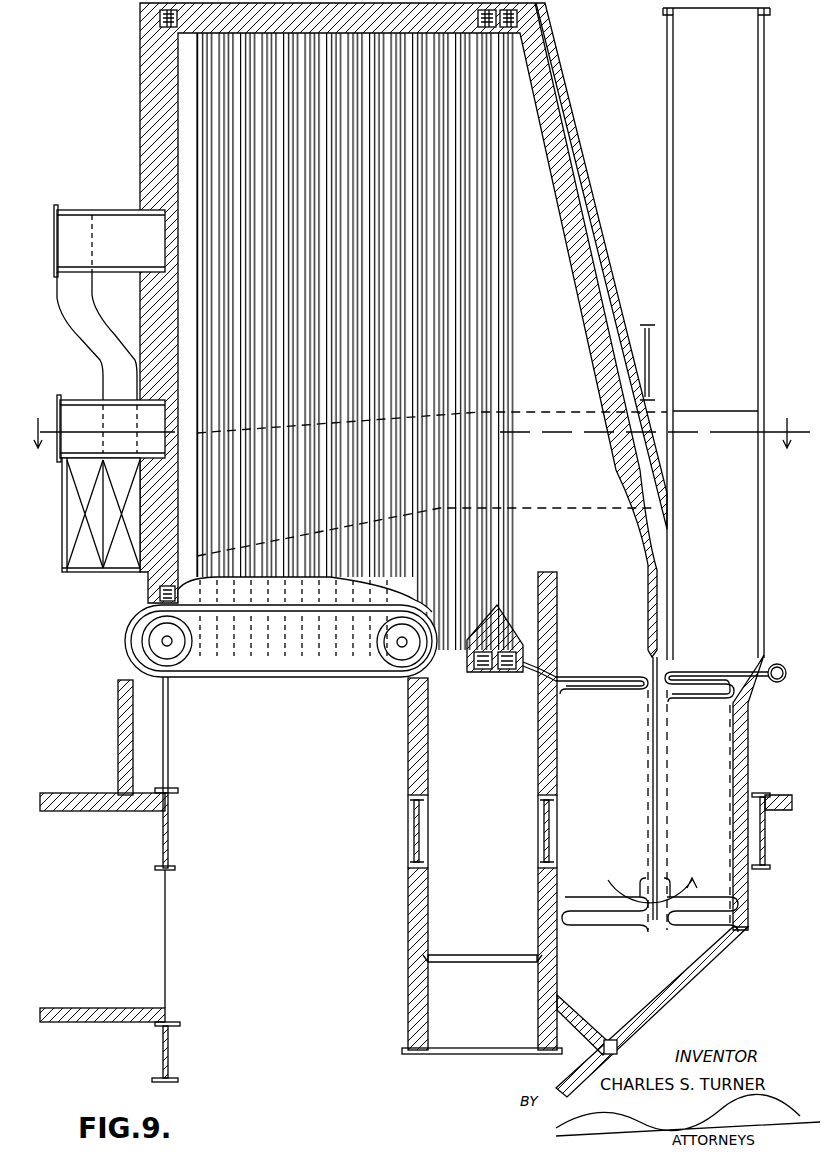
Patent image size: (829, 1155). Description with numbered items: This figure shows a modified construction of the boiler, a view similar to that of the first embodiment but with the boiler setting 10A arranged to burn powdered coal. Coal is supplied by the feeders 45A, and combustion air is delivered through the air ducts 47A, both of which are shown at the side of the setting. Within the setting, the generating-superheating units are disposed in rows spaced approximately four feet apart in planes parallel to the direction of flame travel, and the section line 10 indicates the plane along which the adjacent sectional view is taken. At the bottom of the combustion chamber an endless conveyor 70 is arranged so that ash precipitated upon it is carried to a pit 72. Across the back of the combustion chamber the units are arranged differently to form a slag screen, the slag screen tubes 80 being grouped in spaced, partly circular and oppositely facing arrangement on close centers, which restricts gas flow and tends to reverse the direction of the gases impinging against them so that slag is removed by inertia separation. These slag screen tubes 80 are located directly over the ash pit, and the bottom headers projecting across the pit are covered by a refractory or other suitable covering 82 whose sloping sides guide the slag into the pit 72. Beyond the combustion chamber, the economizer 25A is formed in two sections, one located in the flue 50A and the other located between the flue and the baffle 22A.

The boiler setting 10A is at (142, 78).
The slag screen tubes 80 is at (483, 378).
The feeders 45A is at (109, 333).
The air ducts 47A is at (86, 577).
The section line 10- 10 is at (411, 432).
The endless conveyor 70 is at (286, 680).
The pit 72 is at (482, 866).
The baffle 22A is at (556, 627).
The refractory covering 82 is at (510, 622).
The flue 50A is at (674, 552).
The economizer 25A is at (692, 672).